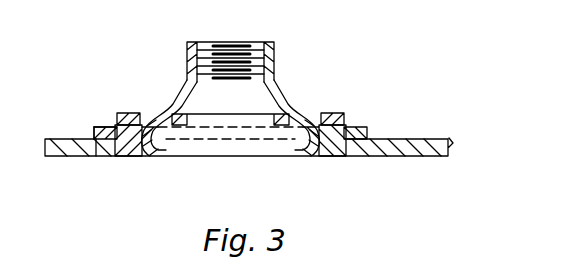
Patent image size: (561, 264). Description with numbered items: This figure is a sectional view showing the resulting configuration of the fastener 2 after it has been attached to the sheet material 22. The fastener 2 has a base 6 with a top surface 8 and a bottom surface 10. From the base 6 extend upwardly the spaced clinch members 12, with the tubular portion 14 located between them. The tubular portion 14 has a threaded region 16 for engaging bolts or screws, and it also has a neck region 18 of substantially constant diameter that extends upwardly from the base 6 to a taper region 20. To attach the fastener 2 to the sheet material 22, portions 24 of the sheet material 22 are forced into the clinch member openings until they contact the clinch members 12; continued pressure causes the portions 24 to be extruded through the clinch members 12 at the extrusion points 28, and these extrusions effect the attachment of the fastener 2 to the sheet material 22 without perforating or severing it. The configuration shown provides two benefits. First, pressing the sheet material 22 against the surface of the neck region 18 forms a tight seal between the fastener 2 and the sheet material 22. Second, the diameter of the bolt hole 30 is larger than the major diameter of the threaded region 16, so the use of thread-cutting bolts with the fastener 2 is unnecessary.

The fastener 2 is at (120, 57).
The base 6 is at (91, 131).
The top surface 8 is at (97, 126).
The bottom surface 10 is at (97, 145).
The clinch members 12 is at (128, 112).
The tubular portion 14 is at (278, 52).
The threaded region 16 is at (232, 40).
The neck region 18 is at (278, 117).
The taper region 20 is at (172, 87).
The sheet material 22 is at (449, 146).
The portions of sheet material 24 is at (131, 157).
The extrusion points 28 is at (150, 112).
The bolt hole 30 is at (222, 142).